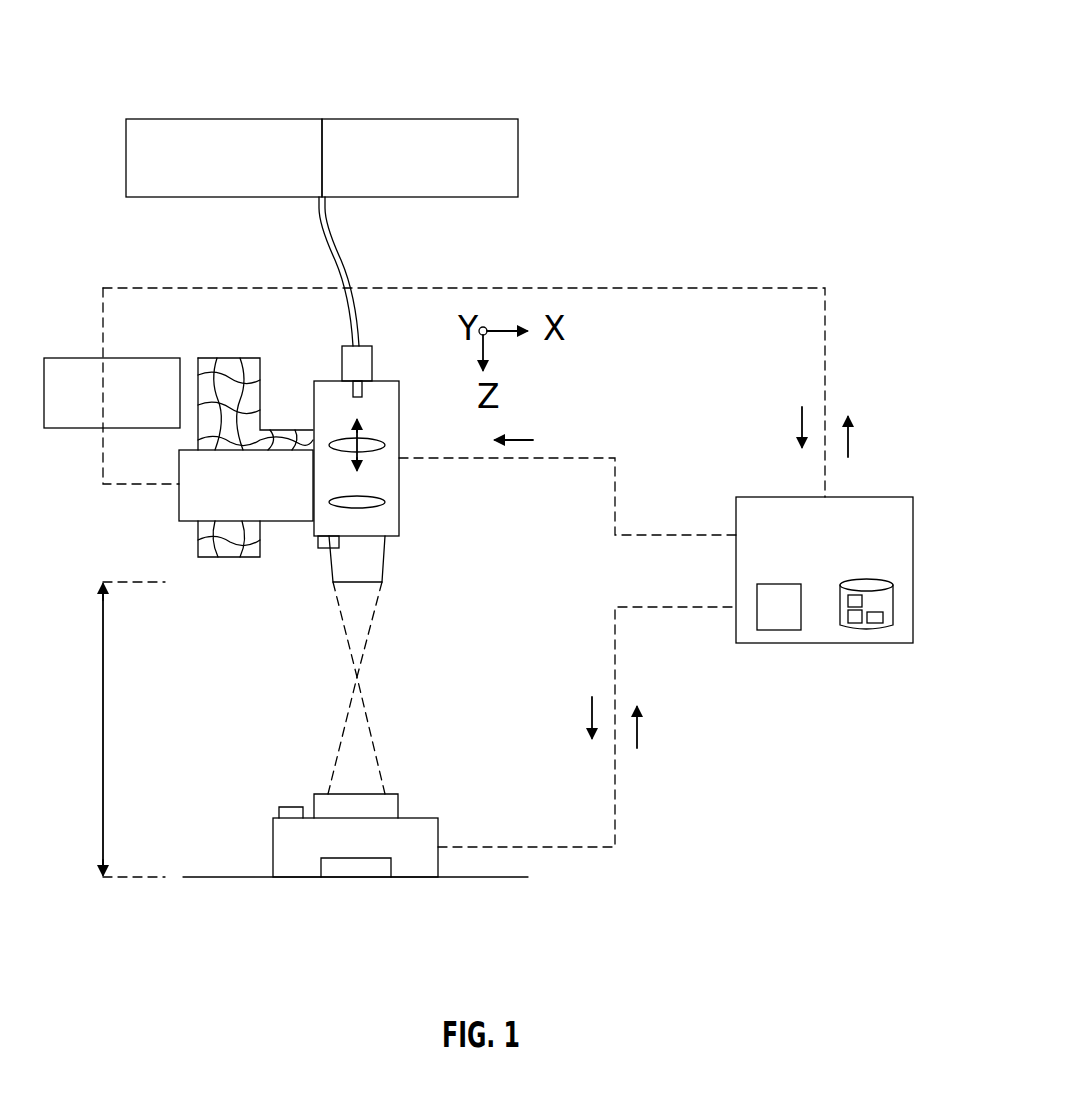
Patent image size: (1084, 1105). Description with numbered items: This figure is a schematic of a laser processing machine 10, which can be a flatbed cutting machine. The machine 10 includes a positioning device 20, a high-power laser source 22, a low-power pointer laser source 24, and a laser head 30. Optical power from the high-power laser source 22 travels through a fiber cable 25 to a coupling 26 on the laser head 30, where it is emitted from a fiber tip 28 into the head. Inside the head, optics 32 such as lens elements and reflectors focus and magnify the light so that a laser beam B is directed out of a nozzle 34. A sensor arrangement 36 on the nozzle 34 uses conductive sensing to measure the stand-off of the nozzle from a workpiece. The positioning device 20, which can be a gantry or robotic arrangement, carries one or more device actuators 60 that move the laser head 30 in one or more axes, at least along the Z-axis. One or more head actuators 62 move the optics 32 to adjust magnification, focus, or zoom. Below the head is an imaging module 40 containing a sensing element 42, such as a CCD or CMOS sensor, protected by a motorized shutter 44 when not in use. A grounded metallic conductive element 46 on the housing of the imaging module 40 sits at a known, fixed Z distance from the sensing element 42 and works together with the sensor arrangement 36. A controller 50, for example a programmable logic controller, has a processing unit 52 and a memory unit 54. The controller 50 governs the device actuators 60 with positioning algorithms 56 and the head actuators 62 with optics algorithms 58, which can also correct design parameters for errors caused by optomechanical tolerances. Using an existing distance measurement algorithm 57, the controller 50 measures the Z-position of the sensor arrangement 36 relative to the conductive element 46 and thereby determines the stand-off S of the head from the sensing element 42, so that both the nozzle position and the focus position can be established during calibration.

The laser processing machine 10 is at (847, 56).
The positioning device 20 is at (228, 604).
The high-power laser source 22 is at (182, 118).
The low-power pointer laser source 24 is at (464, 118).
The fiber cable 25 is at (347, 259).
The coupling 26 is at (342, 368).
The fiber tip 28 is at (363, 392).
The laser head 30 is at (400, 505).
The optics 32 is at (388, 470).
The nozzle 34 is at (385, 562).
The sensor arrangement 36 is at (322, 550).
The imaging module 40 is at (273, 858).
The sensing element 42 is at (320, 860).
The motorized shutter 44 is at (400, 807).
The conductive element 46 is at (292, 806).
The controller 50 is at (868, 497).
The processing unit 52 is at (771, 630).
The memory unit 54 is at (880, 580).
The positioning algorithms 56 is at (845, 600).
The distance measurement algorithm 57 is at (855, 625).
The optics algorithms 58 is at (888, 622).
The device actuators 60 is at (92, 357).
The head actuators 62 is at (287, 522).
The laser beam B is at (377, 760).
The stand-off S is at (130, 729).